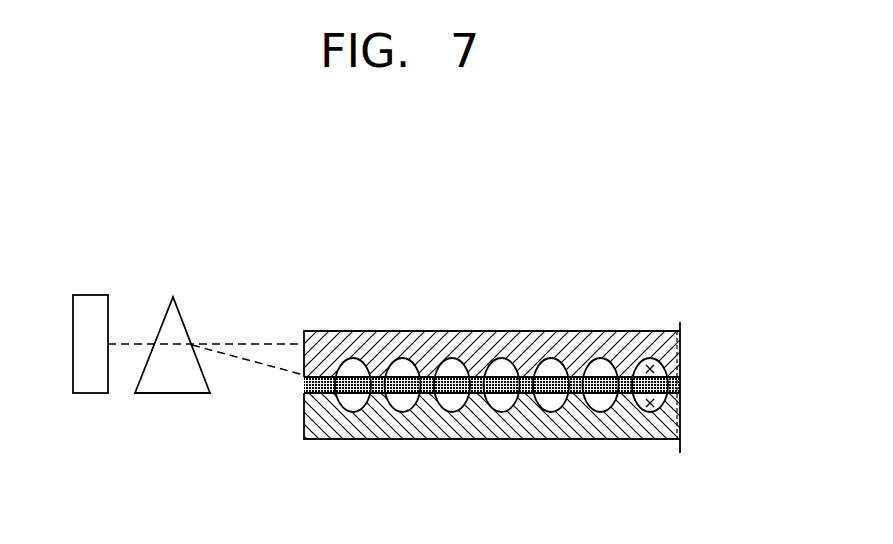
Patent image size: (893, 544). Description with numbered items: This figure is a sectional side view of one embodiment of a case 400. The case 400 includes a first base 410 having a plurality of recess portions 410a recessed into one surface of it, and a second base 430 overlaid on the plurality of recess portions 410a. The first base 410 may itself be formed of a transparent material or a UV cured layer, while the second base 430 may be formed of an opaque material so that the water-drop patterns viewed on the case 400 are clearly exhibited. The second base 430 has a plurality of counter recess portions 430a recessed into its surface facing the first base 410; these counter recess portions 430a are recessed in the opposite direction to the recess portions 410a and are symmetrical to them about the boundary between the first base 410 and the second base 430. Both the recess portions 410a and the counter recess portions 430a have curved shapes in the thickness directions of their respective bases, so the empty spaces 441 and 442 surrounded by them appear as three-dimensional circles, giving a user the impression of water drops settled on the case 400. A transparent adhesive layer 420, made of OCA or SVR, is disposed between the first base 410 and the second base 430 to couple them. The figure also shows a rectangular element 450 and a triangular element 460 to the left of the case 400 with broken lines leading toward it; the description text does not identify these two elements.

The case 400 is at (346, 271).
The first base 410 is at (672, 349).
The recess portions 410a is at (601, 361).
The adhesive layer 420 is at (679, 386).
The second base 430 is at (674, 430).
The counter recess portions 430a is at (601, 410).
The empty space 441 is at (661, 369).
The empty space 442 is at (662, 404).
The light source 450 is at (91, 384).
The prism 460 is at (176, 384).